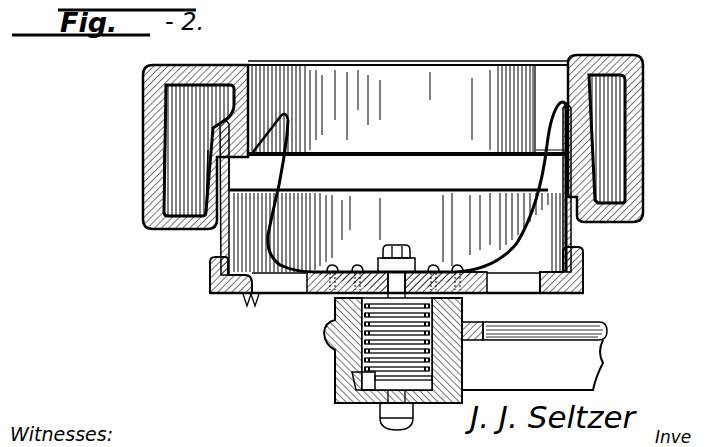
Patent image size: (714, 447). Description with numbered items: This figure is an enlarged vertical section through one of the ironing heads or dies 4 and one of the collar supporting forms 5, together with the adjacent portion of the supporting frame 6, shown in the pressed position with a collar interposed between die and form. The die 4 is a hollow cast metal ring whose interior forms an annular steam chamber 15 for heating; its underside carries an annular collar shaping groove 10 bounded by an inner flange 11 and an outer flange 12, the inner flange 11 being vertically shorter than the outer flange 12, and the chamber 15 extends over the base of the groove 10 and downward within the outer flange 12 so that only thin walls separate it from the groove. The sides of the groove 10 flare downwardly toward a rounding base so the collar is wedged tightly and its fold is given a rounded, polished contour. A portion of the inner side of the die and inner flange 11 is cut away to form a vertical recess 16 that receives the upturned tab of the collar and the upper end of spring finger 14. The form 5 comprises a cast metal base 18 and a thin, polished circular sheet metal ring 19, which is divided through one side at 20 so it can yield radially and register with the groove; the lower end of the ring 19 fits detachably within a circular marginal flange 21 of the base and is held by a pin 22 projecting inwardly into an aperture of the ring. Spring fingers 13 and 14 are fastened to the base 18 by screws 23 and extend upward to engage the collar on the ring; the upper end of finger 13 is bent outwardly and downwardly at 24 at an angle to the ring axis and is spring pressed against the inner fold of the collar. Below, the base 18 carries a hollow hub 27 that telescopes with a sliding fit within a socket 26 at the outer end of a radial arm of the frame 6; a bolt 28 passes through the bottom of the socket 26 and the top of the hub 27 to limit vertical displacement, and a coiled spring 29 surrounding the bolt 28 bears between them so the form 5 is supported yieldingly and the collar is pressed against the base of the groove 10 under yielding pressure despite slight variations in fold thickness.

The ironing head or die 4 is at (588, 90).
The collar supporting form 5 is at (208, 291).
The supporting frame 6 is at (588, 354).
The annular collar shaping groove 10 is at (220, 115).
The inner flange 11 is at (279, 114).
The outer flange 12 is at (205, 177).
The spring finger 13 is at (282, 174).
The spring finger 14 is at (540, 168).
The annular steam chamber 15 is at (180, 117).
The vertical recess 16 is at (551, 85).
The cast metal base 18 is at (248, 305).
The circular sheet metal ring 19 is at (430, 205).
The division of the ring 20 is at (560, 211).
The circular marginal flange 21 is at (207, 273).
The pin 22 is at (553, 263).
The screws 23 is at (355, 266).
The bent portion of spring finger 24 is at (287, 128).
The socket 26 is at (352, 381).
The hub 27 is at (336, 353).
The bolt 28 is at (394, 286).
The coiled spring 29 is at (360, 398).